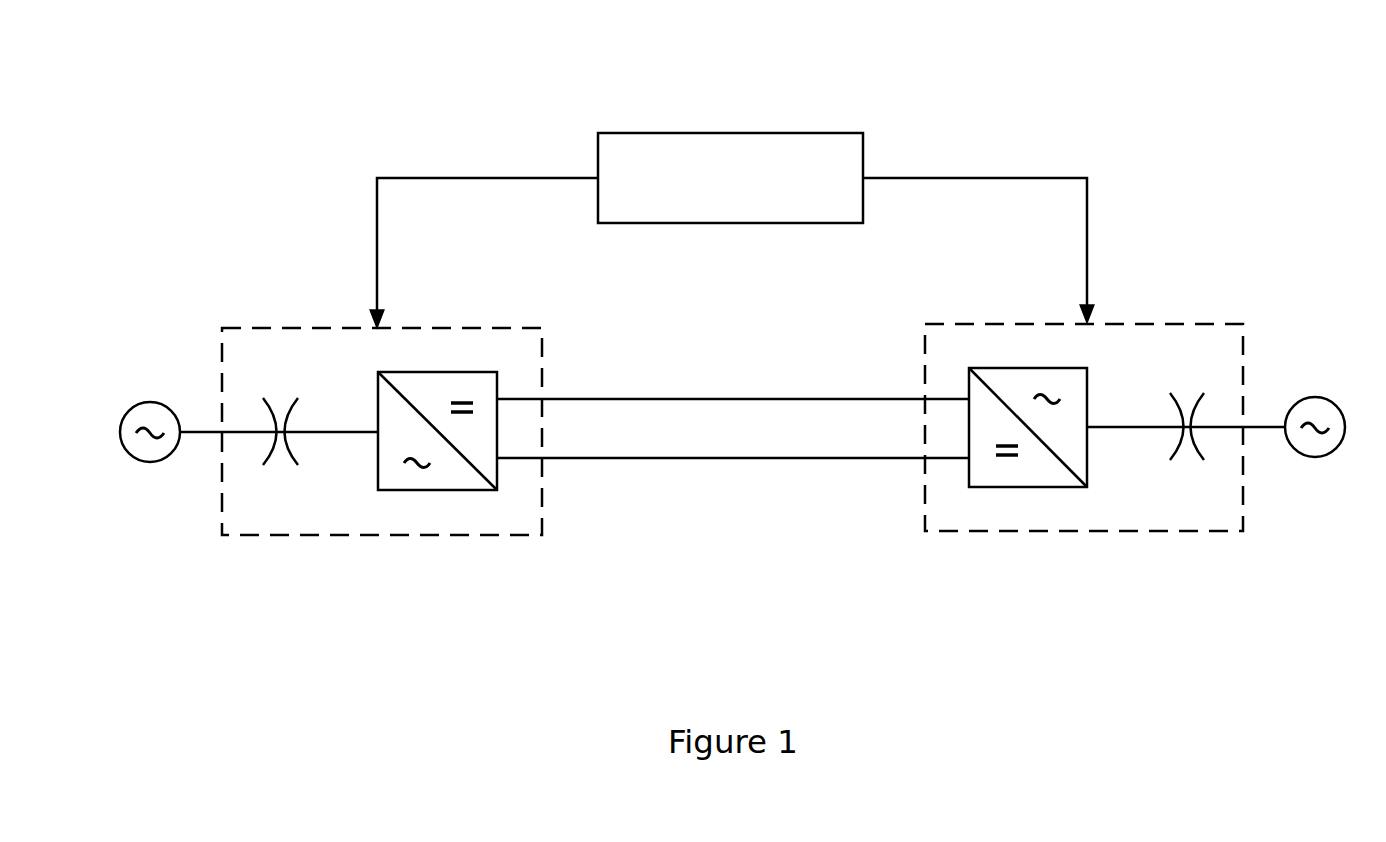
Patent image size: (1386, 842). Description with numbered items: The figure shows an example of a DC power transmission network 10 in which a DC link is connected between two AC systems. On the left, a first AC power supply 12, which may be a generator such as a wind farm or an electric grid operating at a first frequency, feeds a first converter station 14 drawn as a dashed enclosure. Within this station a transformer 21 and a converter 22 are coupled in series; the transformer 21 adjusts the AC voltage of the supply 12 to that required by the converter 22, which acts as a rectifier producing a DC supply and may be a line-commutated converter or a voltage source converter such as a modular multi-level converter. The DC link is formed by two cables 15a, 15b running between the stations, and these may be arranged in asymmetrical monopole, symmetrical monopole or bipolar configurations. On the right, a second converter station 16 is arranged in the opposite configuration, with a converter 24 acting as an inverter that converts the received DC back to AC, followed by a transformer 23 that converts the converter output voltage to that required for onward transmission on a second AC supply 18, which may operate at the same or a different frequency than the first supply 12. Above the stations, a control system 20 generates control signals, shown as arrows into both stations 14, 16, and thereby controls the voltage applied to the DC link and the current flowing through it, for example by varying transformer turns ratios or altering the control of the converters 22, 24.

The DC power transmission network 10 is at (748, 650).
The first AC power supply 12 is at (145, 402).
The first converter station 14 is at (382, 431).
The first cable of the DC link 15a is at (688, 399).
The second cable of the DC link 15b is at (717, 460).
The second converter station 16 is at (1105, 401).
The second AC power supply 18 is at (1328, 397).
The control system 20 is at (625, 133).
The first transformer 21 is at (282, 470).
The first converter 22 is at (442, 492).
The second transformer 23 is at (1185, 460).
The second converter 24 is at (993, 487).